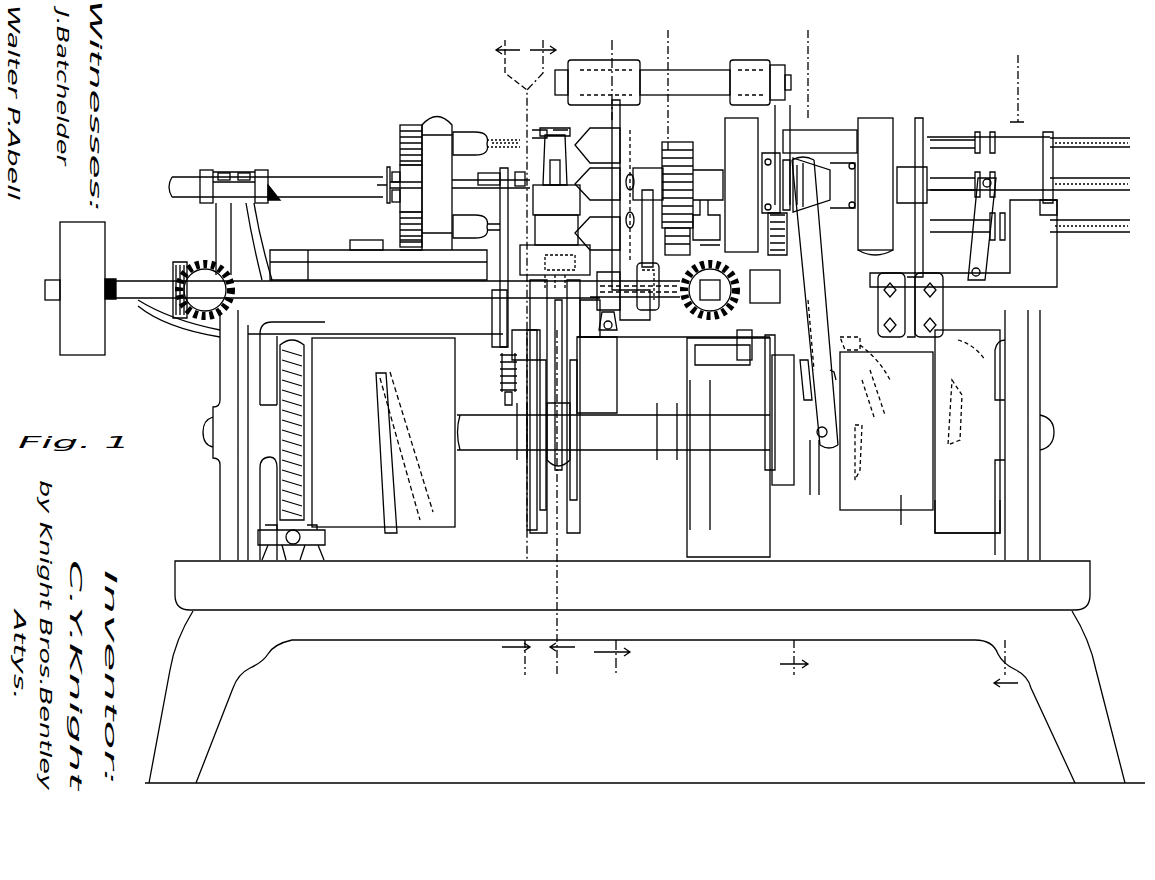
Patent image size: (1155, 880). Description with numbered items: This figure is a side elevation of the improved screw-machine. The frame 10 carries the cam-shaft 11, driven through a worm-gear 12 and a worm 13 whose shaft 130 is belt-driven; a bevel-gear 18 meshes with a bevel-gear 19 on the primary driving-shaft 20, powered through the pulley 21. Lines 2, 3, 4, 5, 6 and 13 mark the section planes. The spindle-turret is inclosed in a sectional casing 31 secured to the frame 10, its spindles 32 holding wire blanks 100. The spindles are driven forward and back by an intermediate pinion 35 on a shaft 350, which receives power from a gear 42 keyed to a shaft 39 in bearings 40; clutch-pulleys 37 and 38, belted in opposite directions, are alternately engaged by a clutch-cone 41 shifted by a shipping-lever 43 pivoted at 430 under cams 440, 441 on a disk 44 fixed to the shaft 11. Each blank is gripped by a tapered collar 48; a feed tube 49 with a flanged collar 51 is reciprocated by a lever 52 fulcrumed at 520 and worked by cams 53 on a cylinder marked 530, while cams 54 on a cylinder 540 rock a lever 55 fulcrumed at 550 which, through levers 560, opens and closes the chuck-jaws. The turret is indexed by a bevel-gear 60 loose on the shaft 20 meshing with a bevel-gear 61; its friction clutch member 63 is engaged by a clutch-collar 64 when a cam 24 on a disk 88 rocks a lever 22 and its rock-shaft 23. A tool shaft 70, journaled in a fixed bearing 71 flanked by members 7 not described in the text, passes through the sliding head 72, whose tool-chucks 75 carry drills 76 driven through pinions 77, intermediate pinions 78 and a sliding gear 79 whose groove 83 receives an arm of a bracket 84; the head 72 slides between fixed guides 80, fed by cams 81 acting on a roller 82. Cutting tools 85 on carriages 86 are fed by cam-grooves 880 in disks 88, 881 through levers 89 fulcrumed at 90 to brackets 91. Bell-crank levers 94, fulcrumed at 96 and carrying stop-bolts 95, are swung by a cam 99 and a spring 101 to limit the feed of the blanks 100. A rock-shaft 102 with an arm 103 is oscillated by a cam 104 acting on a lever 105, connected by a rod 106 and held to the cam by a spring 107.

The section line 2 is at (529, 360).
The section line 3 is at (612, 359).
The section line 4 is at (796, 354).
The section line 5 is at (535, 360).
The section line 6 is at (668, 326).
The bearing block 7 is at (206, 170).
The frame 10 is at (1032, 490).
The cam-shaft 11 is at (627, 437).
The worm-gear 12 is at (304, 495).
The worm 13 is at (1012, 372).
The bevel-gear 18 is at (205, 262).
The bevel-gear 19 is at (178, 262).
The primary driving-shaft 20 is at (245, 290).
The pulley 21 is at (60, 333).
The lever 22 is at (572, 330).
The rock-shaft 23 is at (609, 334).
The cam 24 is at (582, 380).
The sectional casing 31 is at (695, 82).
The spindles 32 is at (830, 130).
The intermediate pinion 35 is at (665, 250).
The clutch-pulley 37 is at (741, 185).
The clutch-pulley 38 is at (875, 186).
The shaft 39 is at (628, 172).
The bearings 40 is at (642, 168).
The clutch-cone 41 is at (800, 160).
The gear 42 is at (682, 142).
The shipping-lever 43 is at (840, 418).
The disk 44 is at (810, 482).
The internally tapered collar 48 is at (590, 130).
The longitudinally movable tube 49 is at (962, 175).
The flanged collar 51 is at (984, 130).
The oscillating lever 52 is at (992, 200).
The cams 53 is at (1000, 350).
The cams 54 is at (883, 446).
The lever 55 is at (880, 345).
The bevel-gear 60 is at (700, 312).
The bevel-gear 61 is at (737, 340).
The friction clutch member 63 is at (632, 300).
The clutch-collar 64 is at (648, 322).
The shaft 70 is at (290, 175).
The fixed bearing 71 is at (232, 172).
The sliding head 72 is at (435, 112).
The tool-chucks 75 is at (462, 130).
The tool 76 is at (498, 138).
The pinion 77 is at (408, 125).
The intermediate pinions 78 is at (398, 205).
The gear 79 is at (396, 168).
The fixed guides 80 is at (338, 262).
The cams 81 is at (386, 385).
The roller 82 is at (378, 340).
The groove 83 is at (396, 202).
The bracket 84 is at (386, 178).
The cutting tools 85 is at (560, 178).
The carriages 86 is at (555, 237).
The disk 88 is at (578, 520).
The levers 89 is at (552, 433).
The fulcrum 90 is at (500, 362).
The brackets 91 is at (512, 336).
The bell-crank levers 94 is at (500, 176).
The stop-bolts 95 is at (515, 172).
The fulcrum 96 is at (492, 320).
The cam 99 is at (527, 498).
The wire rod or blank 100 is at (548, 135).
The spring 101 is at (504, 395).
The rock-shaft 102 is at (750, 60).
The arm 103 is at (778, 65).
The cam 104 is at (770, 478).
The lever 105 is at (770, 385).
The rod 106 is at (782, 110).
The spring 107 is at (790, 262).
The shaft 130 is at (295, 548).
The shaft 350 is at (665, 238).
The pivot 430 is at (849, 374).
The cam 440 is at (770, 402).
The cam 441 is at (818, 367).
The fulcrum 520 is at (980, 280).
The bottom 530 is at (990, 508).
The cylinder 540 is at (908, 519).
The fulcrum 550 is at (910, 305).
The levers 560 is at (768, 160).
The cam-grooves 880 is at (540, 508).
The disk 881 is at (532, 525).